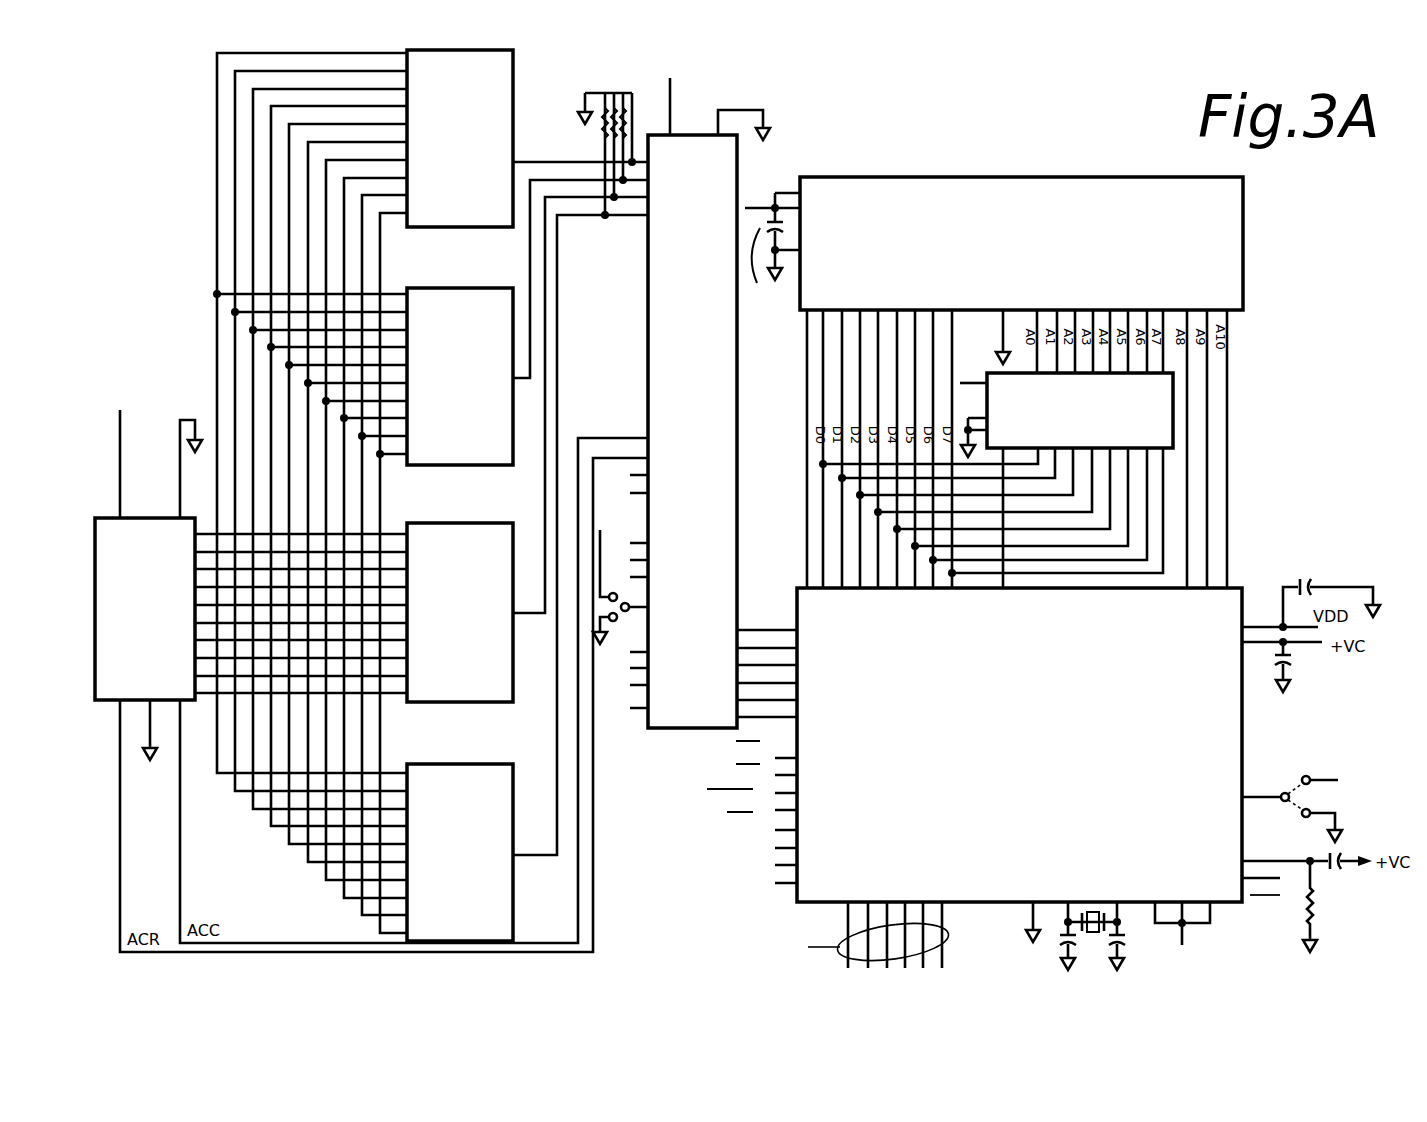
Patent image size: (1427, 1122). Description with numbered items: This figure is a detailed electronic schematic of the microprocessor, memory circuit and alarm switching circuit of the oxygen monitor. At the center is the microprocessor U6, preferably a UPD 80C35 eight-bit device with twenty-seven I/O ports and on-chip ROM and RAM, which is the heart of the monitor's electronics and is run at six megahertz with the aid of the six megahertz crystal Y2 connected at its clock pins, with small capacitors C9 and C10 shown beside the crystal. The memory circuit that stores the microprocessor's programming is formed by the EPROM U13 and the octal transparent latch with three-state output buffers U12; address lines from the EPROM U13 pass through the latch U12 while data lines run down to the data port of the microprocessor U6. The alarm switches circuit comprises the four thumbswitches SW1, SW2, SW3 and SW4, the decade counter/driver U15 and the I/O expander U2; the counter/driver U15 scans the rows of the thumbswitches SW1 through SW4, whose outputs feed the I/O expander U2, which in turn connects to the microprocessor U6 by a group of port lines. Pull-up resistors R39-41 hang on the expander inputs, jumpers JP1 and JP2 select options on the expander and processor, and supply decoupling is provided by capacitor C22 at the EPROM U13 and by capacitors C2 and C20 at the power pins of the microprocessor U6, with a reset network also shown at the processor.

The thumbswitch SW1 is at (460, 136).
The thumbswitch SW2 is at (460, 376).
The thumbswitch SW3 is at (460, 612).
The thumbswitch SW4 is at (460, 852).
The decade counter/driver U15 is at (148, 571).
The I/O expander U2 is at (698, 403).
The EPROM U13 is at (994, 241).
The octal transparent latch U12 is at (996, 473).
The microprocessor U6 is at (993, 778).
The pull-up resistors R39-R41 R39-41 is at (598, 143).
The jumper JP1 is at (620, 579).
The jumper JP2 is at (1312, 800).
The capacitor C22 is at (772, 259).
The capacitor C2 is at (1329, 592).
The capacitor C20 is at (1303, 665).
The capacitor C9 is at (1012, 934).
The capacitor C10 is at (1111, 952).
The crystal Y2 is at (1092, 937).